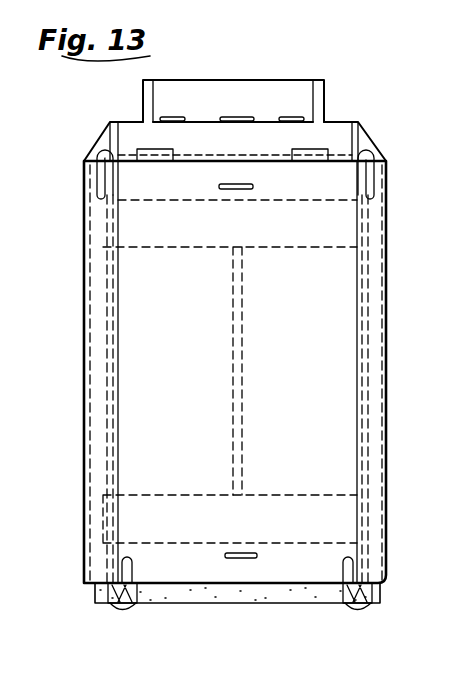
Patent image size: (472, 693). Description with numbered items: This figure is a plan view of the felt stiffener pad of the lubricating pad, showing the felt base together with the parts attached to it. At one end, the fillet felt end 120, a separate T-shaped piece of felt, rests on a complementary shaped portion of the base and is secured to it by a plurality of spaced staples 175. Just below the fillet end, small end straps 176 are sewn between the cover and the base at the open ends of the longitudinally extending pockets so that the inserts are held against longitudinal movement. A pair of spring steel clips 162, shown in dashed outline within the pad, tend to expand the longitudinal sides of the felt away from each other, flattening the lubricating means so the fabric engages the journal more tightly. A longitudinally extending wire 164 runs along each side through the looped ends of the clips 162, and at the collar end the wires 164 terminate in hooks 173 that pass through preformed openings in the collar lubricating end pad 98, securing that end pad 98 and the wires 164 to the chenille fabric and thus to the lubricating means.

The collar lubricating end pad 98 is at (250, 602).
The fillet felt end 120 is at (275, 94).
The spring steel clips 162 is at (152, 244).
The wire 164 is at (114, 378).
The hooks 173 is at (126, 606).
The staples 175 is at (174, 128).
The end straps 176 is at (150, 158).